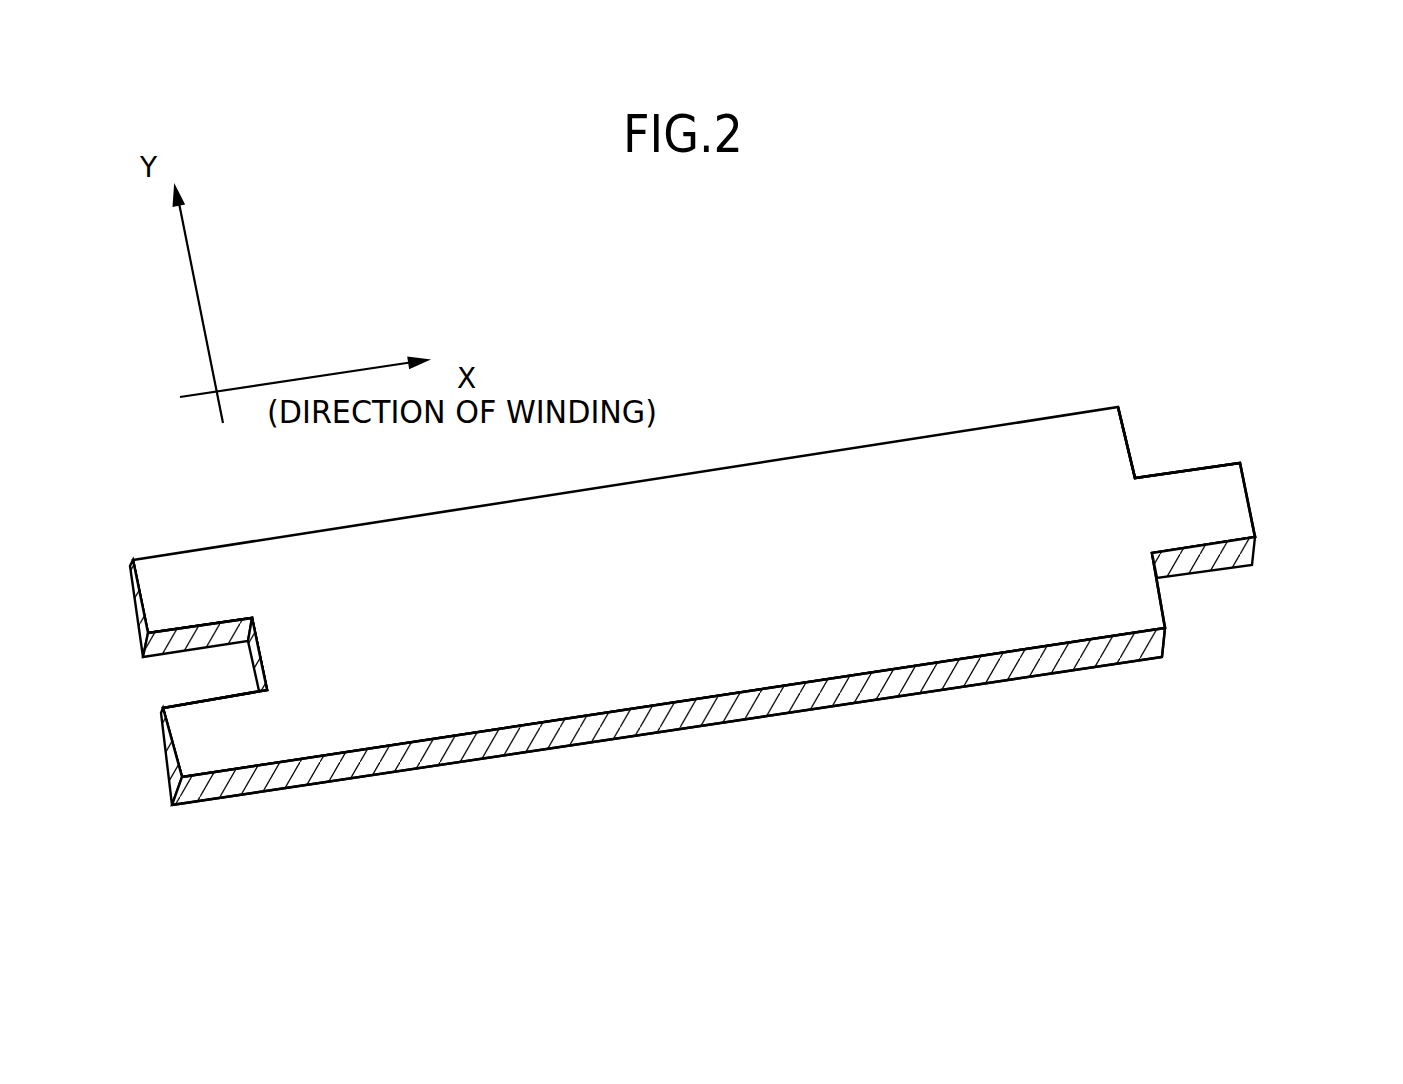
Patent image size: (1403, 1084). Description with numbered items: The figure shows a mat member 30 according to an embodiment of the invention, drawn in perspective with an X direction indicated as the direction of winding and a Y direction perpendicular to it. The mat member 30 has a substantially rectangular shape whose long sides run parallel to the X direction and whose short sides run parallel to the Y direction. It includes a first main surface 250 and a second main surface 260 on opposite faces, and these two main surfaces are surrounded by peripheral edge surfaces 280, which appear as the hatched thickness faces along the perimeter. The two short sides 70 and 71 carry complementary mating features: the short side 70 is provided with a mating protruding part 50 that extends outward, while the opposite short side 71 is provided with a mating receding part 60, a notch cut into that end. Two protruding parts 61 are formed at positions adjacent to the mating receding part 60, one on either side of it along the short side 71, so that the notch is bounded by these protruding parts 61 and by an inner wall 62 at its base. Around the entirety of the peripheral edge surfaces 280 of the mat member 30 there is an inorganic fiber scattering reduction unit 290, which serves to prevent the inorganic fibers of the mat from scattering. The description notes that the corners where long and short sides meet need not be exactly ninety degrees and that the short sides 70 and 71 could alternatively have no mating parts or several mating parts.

The mat member 30 is at (850, 401).
The first main surface 250 is at (1108, 430).
The mating protruding part 50 is at (1183, 485).
The short side 70 is at (1260, 393).
The short side 71 is at (123, 543).
The protruding parts 61 is at (162, 590).
The mating receding part 60 is at (202, 675).
The bottom wall of slit 62 is at (263, 653).
The inorganic fiber scattering reduction unit 290 is at (587, 732).
The second main surface 260 is at (940, 692).
The edge surfaces 280 is at (1184, 650).